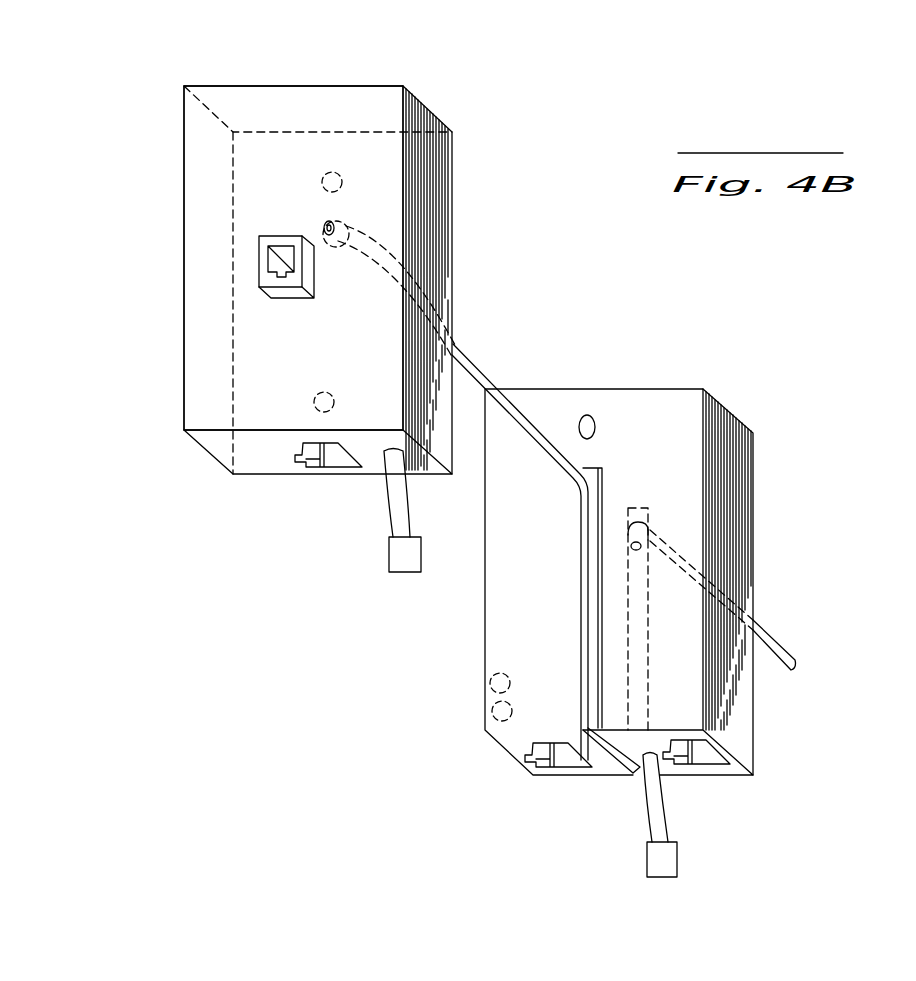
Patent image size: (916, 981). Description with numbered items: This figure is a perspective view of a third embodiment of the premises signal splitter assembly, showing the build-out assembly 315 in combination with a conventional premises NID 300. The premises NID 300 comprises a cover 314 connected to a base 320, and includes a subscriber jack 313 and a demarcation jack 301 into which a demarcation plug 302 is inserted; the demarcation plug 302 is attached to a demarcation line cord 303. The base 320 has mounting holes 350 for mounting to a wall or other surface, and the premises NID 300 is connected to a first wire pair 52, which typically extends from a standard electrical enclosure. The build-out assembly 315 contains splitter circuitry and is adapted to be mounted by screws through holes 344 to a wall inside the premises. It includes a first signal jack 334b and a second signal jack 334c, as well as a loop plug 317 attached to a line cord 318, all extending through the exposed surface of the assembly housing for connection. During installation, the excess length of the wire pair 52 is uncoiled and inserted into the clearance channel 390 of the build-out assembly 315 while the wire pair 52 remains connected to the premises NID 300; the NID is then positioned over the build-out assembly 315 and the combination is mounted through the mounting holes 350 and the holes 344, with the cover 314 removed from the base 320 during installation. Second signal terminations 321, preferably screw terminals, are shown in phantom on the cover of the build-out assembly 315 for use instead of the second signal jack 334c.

The premises NID 300 is at (192, 75).
The cover 314 is at (355, 95).
The base 320 is at (436, 222).
The mounting holes 350 is at (328, 176).
The subscriber jack 313 is at (262, 248).
The demarcation jack 301 is at (322, 468).
The demarcation line cord 303 is at (396, 497).
The demarcation plug 302 is at (404, 556).
The first wire pair 52 is at (470, 375).
The holes 344 is at (597, 429).
The build-out assembly 315 is at (676, 500).
The clearance channel 390 is at (583, 577).
The second signal terminations 321 is at (487, 713).
The second signal jack 334c is at (573, 766).
The first signal jack 334b is at (720, 770).
The line cord 318 is at (640, 806).
The loop plug 317 is at (668, 865).